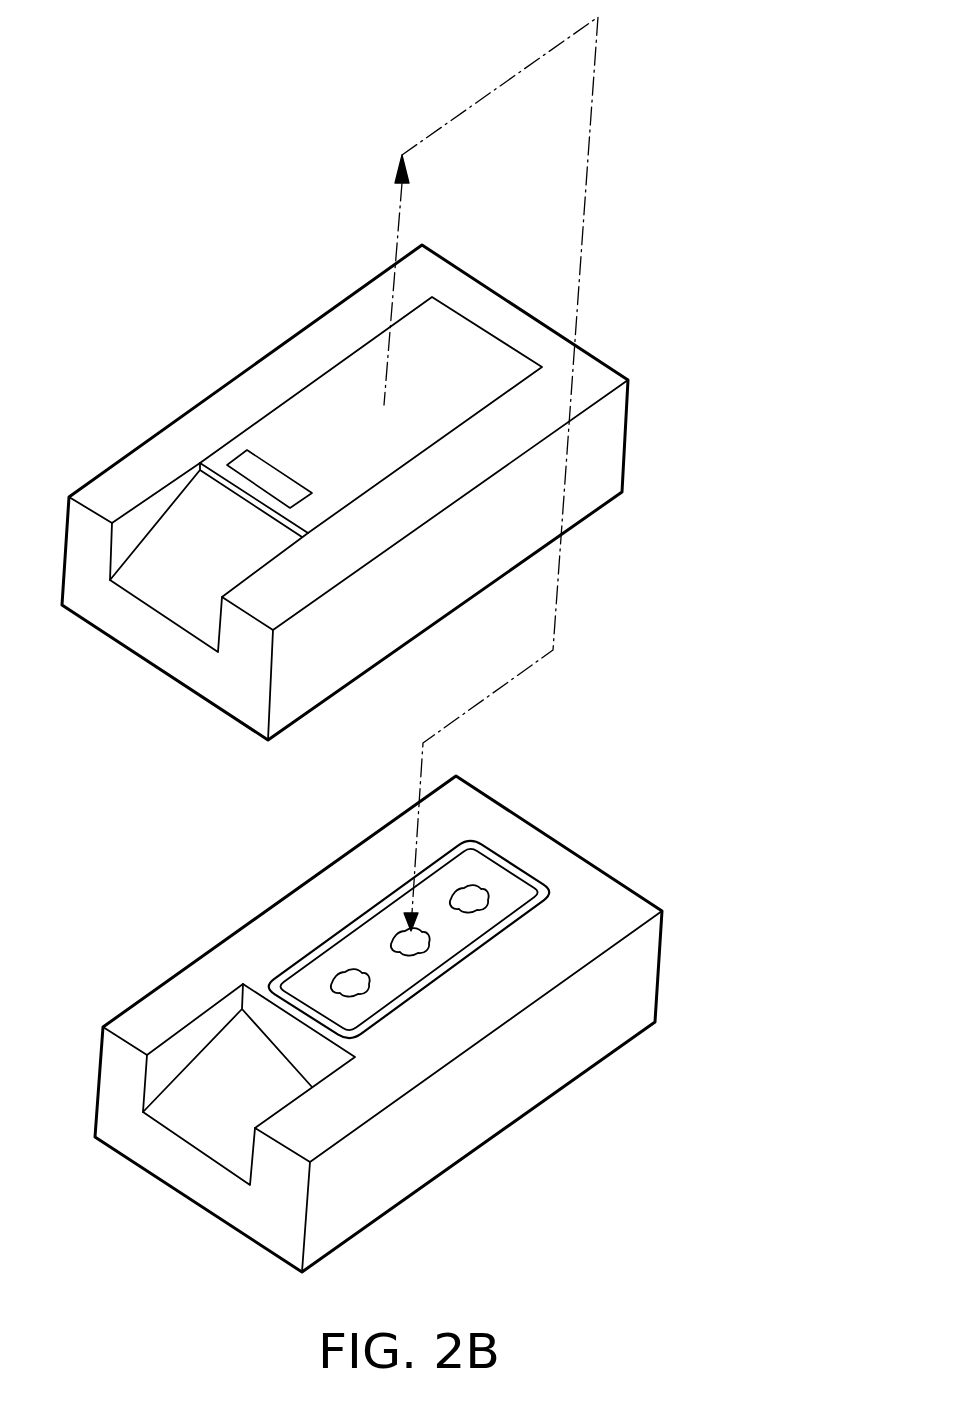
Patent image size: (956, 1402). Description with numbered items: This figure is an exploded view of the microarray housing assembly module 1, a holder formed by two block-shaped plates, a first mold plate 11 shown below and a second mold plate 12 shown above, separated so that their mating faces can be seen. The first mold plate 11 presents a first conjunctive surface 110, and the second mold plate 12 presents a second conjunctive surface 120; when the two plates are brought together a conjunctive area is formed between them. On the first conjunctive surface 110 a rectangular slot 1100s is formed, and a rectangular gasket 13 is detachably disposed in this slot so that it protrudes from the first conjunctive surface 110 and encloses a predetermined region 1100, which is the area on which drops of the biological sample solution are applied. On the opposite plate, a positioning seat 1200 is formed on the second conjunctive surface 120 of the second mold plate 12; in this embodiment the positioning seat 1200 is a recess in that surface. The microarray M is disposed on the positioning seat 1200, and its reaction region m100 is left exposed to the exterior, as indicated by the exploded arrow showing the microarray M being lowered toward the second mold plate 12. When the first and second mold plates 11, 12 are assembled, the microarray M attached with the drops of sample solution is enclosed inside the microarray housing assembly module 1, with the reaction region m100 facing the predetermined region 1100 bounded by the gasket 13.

The microarray housing assembly module 1 is at (444, 644).
The first mold plate 11 is at (441, 995).
The first conjunctive surface 110 is at (587, 888).
The predetermined region 1100 is at (463, 933).
The rectangular slot 1100s is at (523, 862).
The rectangular gasket 13 is at (500, 832).
The second mold plate 12 is at (426, 465).
The second conjunctive surface 120 is at (574, 378).
The positioning seat 1200 is at (476, 322).
The reaction region m100 is at (369, 453).
The microarray M is at (440, 318).